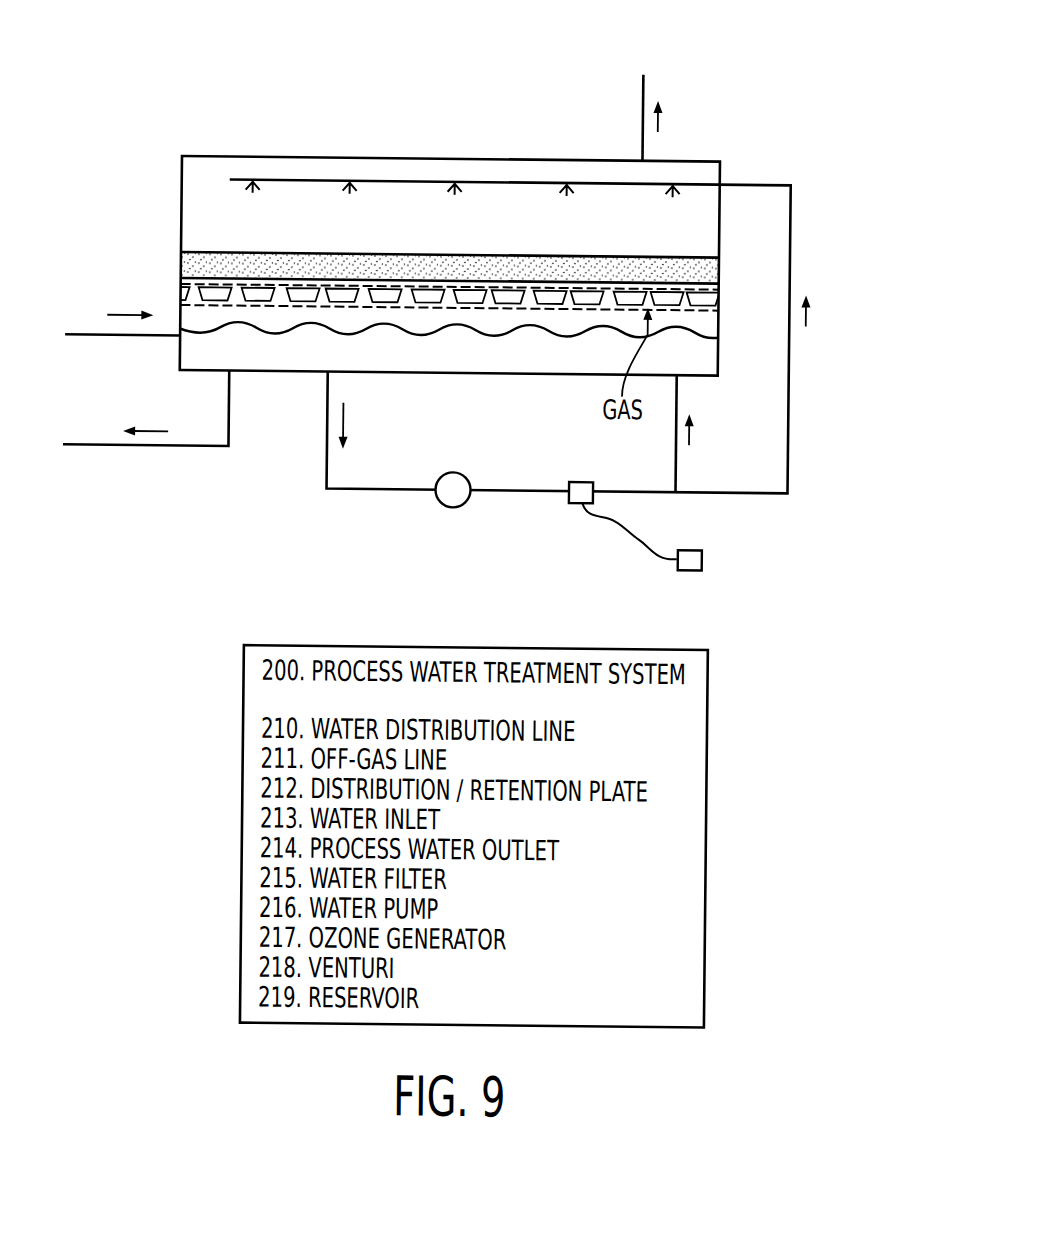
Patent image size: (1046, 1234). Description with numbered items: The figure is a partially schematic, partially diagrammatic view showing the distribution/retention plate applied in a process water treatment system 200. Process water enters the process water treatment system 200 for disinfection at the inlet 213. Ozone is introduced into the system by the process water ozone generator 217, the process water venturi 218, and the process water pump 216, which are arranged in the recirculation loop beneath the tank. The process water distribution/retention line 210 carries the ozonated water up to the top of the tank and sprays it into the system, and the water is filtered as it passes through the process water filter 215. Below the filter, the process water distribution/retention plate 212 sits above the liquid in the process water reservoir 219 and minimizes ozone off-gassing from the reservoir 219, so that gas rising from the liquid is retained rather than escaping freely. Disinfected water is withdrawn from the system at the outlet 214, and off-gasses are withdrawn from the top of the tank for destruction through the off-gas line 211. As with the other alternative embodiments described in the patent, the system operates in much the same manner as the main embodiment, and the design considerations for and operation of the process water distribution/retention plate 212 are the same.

The process water treatment system 200 is at (180, 67).
The process water distribution/retention line 210 is at (793, 204).
The off-gas withdrawal point 211 is at (642, 88).
The process water distribution/retention plate 212 is at (724, 296).
The process water inlet 213 is at (85, 334).
The disinfected water withdrawal point 214 is at (86, 445).
The process water filter 215 is at (182, 264).
The process water pump 216 is at (458, 470).
The process water ozone generator 217 is at (696, 566).
The process water venturi 218 is at (576, 478).
The process water reservoir 219 is at (183, 353).